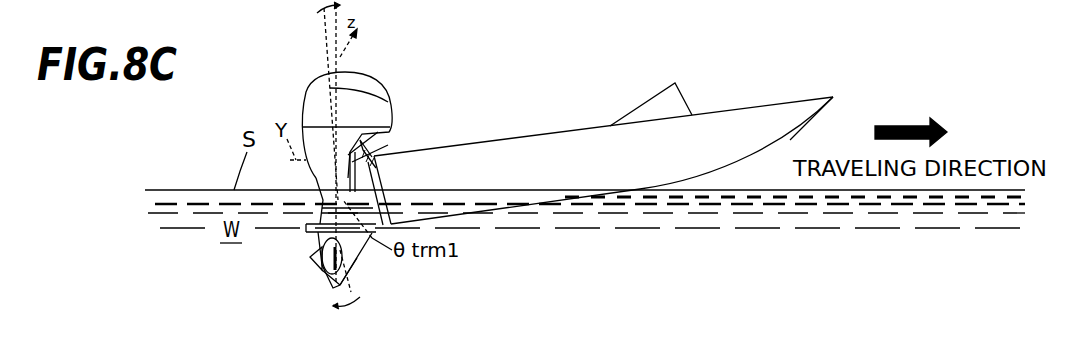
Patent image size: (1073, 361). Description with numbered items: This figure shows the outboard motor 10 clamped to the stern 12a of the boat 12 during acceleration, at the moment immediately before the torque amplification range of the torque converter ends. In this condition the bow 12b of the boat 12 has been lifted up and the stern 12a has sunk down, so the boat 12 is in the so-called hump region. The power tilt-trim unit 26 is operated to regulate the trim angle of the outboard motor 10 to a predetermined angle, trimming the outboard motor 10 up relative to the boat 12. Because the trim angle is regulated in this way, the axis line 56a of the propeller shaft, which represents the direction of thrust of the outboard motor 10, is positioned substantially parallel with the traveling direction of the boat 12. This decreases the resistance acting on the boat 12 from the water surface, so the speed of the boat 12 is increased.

The outboard motor 10 is at (373, 73).
The boat 12 is at (496, 144).
The stern 12a is at (385, 158).
The bow 12b is at (815, 102).
The power tilt-trim unit 26 is at (378, 175).
The axis line of the propeller shaft 56a is at (312, 257).